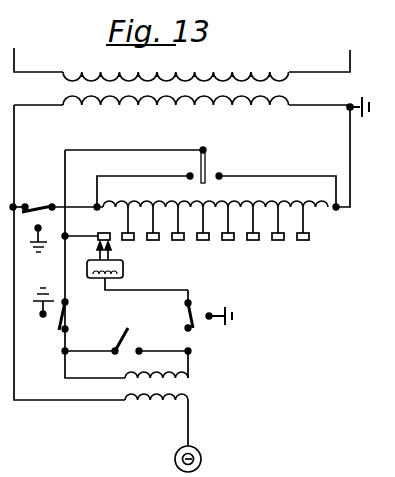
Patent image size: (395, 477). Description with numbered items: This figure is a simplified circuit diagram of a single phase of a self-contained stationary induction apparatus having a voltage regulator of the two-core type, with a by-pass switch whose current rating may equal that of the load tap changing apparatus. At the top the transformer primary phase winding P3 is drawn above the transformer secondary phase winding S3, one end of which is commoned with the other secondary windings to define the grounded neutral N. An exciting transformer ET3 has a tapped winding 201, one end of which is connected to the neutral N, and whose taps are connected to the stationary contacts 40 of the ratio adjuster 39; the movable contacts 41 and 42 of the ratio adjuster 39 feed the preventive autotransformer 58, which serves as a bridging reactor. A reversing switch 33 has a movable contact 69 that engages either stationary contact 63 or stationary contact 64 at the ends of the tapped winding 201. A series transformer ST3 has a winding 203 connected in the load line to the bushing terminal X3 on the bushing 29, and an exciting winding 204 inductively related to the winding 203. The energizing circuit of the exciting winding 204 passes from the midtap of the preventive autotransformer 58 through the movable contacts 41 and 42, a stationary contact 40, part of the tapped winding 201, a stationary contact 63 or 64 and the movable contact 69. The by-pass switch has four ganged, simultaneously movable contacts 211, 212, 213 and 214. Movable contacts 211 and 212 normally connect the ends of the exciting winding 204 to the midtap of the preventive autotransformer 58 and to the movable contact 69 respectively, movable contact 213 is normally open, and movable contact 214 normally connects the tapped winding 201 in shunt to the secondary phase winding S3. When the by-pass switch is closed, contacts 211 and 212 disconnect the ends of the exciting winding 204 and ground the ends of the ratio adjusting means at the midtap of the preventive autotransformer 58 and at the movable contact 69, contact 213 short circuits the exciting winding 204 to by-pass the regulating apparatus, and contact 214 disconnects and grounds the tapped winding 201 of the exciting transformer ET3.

The transformer primary phase winding P3 is at (197, 78).
The transformer secondary phase winding S3 is at (219, 101).
The neutral N is at (349, 105).
The movable contact 214 is at (36, 208).
The exciting transformer ET3 is at (103, 207).
The movable contact of reversing switch 69 is at (200, 162).
The reversing switch 33 is at (247, 167).
The stationary contact of reversing switch 64 is at (190, 179).
The stationary contact of reversing switch 63 is at (220, 179).
The tapped winding 201 is at (282, 206).
The stationary contact 40 is at (184, 240).
The ratio adjuster 39 is at (264, 266).
The movable contact 41 is at (98, 251).
The movable contact 42 is at (110, 251).
The preventive autotransformer 58 is at (121, 275).
The movable contact 212 is at (70, 314).
The movable contact 213 is at (133, 331).
The movable contact 211 is at (195, 329).
The exciting winding of series transformer 204 is at (160, 372).
The series transformer ST3 is at (233, 394).
The series transformer winding 203 is at (161, 401).
The bushing 29 is at (175, 459).
The bushing terminal X3 is at (202, 457).